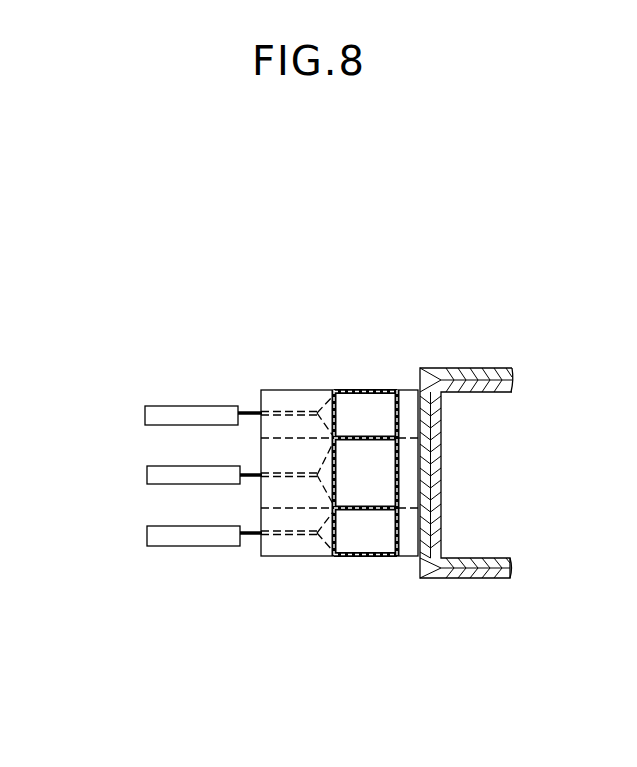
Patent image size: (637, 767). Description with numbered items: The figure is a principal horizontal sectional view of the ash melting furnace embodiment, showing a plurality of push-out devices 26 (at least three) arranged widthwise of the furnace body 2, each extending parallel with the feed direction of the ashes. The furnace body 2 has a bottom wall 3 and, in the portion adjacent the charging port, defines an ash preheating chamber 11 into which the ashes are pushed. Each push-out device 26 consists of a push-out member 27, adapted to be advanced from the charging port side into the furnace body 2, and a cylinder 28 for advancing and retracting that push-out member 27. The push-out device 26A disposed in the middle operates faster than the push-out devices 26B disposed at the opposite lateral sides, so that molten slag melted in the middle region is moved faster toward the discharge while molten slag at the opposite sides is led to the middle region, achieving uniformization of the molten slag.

The furnace body 2 is at (479, 367).
The bottom wall 3 is at (480, 523).
The ash preheating chamber 11 is at (488, 468).
The push-out devices 26 is at (167, 476).
The push-out device disposed in the middle 26A is at (141, 481).
The push-out devices disposed at the opposite lateral sides 26B is at (178, 401).
The push-out member 27 is at (363, 410).
The cylinder 28 is at (213, 406).